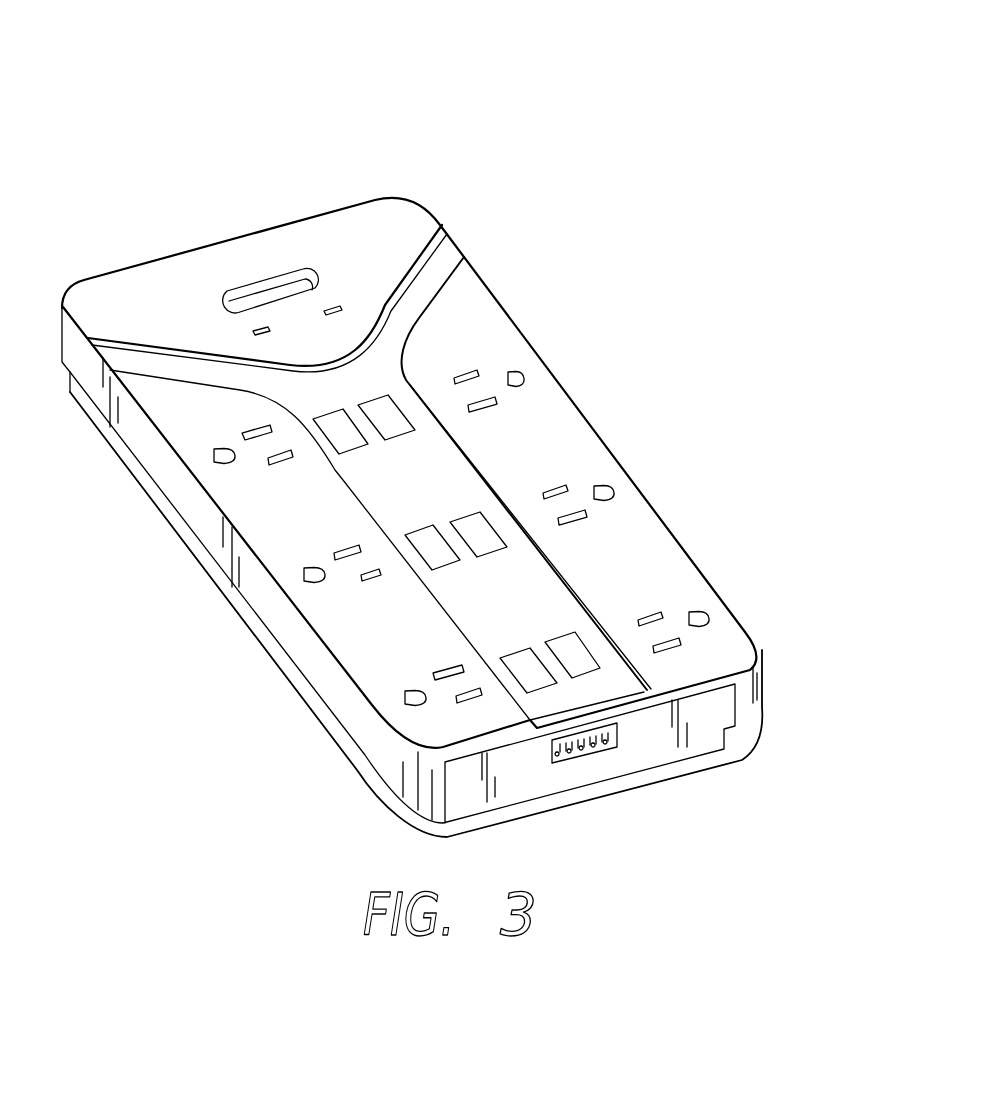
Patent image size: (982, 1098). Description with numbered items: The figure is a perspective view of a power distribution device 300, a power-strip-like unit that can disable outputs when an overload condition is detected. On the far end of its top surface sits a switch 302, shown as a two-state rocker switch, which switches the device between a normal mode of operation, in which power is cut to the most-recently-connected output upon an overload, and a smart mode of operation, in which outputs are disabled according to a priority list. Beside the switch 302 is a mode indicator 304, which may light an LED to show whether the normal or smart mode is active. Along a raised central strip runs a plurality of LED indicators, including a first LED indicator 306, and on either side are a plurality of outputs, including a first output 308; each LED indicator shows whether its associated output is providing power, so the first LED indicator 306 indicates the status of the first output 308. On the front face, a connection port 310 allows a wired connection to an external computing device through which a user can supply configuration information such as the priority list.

The power distribution device 300 is at (262, 75).
The switch 302 is at (313, 273).
The mode indicator 304 is at (342, 307).
The first LED indicator 306 is at (397, 405).
The first output 308 is at (522, 377).
The connection port 310 is at (583, 753).